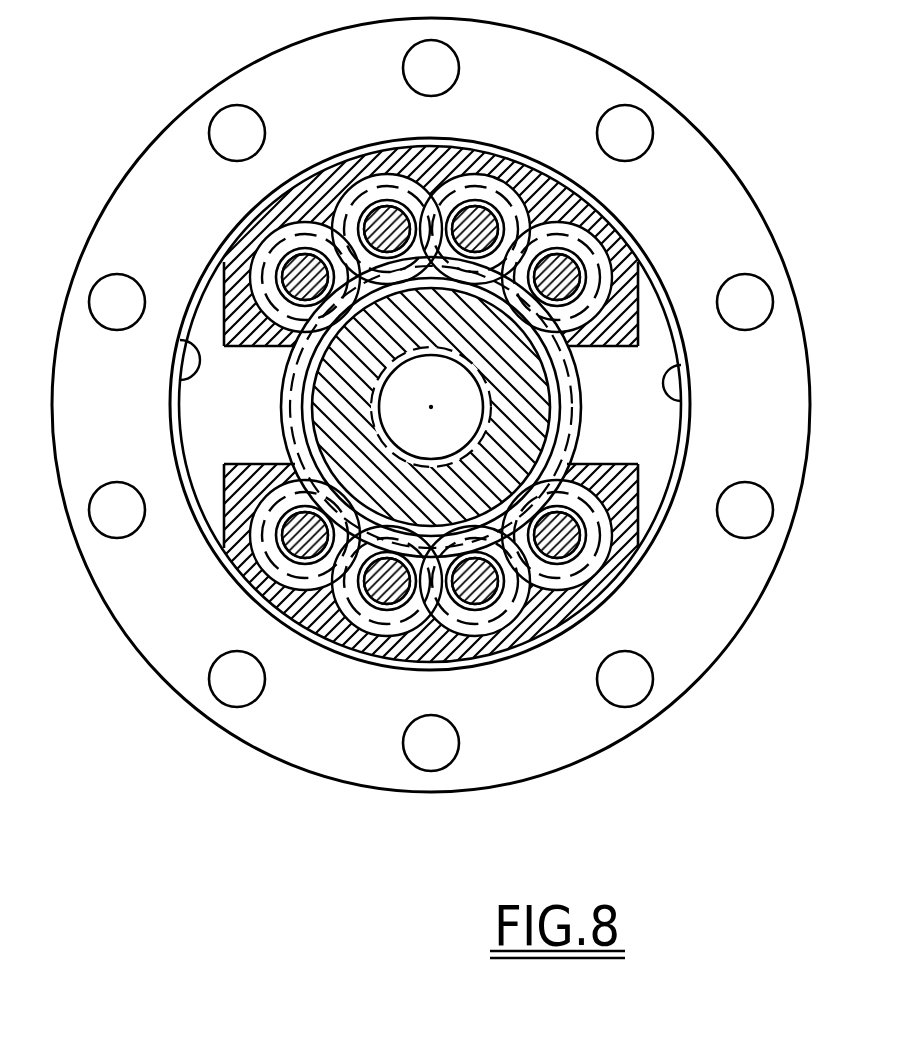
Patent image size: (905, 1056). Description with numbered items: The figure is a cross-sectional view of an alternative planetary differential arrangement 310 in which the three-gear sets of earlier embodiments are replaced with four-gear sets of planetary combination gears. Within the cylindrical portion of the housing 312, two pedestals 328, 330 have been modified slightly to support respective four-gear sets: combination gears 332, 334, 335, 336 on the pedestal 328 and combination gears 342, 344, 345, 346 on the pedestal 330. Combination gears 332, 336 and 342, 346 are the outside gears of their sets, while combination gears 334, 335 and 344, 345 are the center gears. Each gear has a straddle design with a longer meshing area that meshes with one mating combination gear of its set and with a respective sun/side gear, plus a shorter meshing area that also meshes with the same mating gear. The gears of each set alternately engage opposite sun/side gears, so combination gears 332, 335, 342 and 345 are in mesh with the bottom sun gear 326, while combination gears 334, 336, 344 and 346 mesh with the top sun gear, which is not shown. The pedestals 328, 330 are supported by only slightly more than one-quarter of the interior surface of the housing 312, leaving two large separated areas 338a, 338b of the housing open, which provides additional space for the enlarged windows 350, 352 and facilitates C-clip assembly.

The planetary gear assembly 310 is at (150, 112).
The housing 312 is at (172, 447).
The bottom sun gear 326 is at (528, 432).
The pedestal 328 is at (232, 297).
The pedestal 330 is at (592, 500).
The combination gear 332 is at (299, 268).
The combination gear 334 is at (388, 228).
The combination gear 335 is at (482, 225).
The combination gear 336 is at (557, 266).
The separated area 338a is at (180, 380).
The separated area 338b is at (683, 378).
The combination gear 342 is at (561, 540).
The combination gear 344 is at (473, 597).
The combination gear 345 is at (383, 597).
The combination gear 346 is at (291, 538).
The enlarged window 350 is at (227, 498).
The enlarged window 352 is at (640, 283).